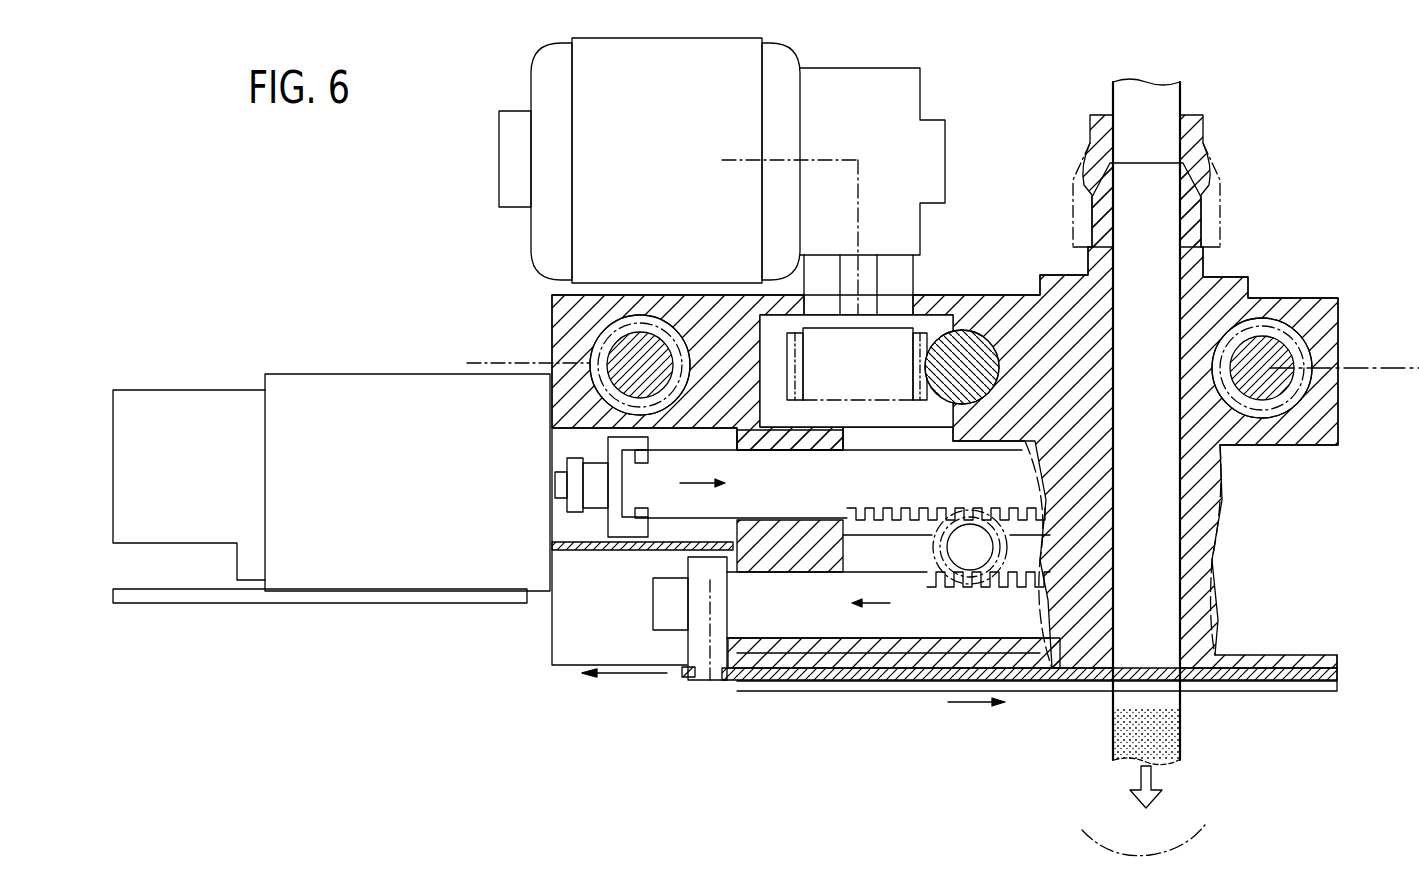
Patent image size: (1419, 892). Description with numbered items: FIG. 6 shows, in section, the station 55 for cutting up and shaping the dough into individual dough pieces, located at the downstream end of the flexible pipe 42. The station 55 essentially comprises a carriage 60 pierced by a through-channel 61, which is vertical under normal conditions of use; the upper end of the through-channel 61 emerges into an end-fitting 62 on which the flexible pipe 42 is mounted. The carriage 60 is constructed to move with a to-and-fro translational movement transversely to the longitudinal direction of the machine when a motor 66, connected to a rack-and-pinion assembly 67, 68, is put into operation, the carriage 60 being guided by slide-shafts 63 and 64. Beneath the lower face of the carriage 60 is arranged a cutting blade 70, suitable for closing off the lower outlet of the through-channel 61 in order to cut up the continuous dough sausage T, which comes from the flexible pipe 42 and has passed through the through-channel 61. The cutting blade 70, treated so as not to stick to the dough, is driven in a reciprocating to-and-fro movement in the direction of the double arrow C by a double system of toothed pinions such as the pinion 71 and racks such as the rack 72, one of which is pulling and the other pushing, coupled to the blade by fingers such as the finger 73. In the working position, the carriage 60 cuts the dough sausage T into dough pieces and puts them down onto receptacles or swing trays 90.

The station 55 is at (1000, 184).
The motor 66 is at (620, 45).
The carriage 60 is at (1232, 292).
The slide-shaft 63 is at (600, 355).
The slide-shaft 64 is at (1308, 300).
The rack-and-pinion assembly 67 is at (905, 330).
The rack-and-pinion assembly 68 is at (972, 335).
The through-channel 61 is at (1190, 560).
The end-fitting 62 is at (1200, 185).
The flexible pipe 42 is at (1205, 133).
The toothed pinion 71 is at (975, 545).
The rack 72 is at (925, 623).
The finger 73 is at (688, 652).
The cutting blade 70 is at (1248, 668).
The continuous dough sausage T is at (1178, 740).
The double arrow C is at (976, 725).
The swing tray 90 is at (1208, 832).